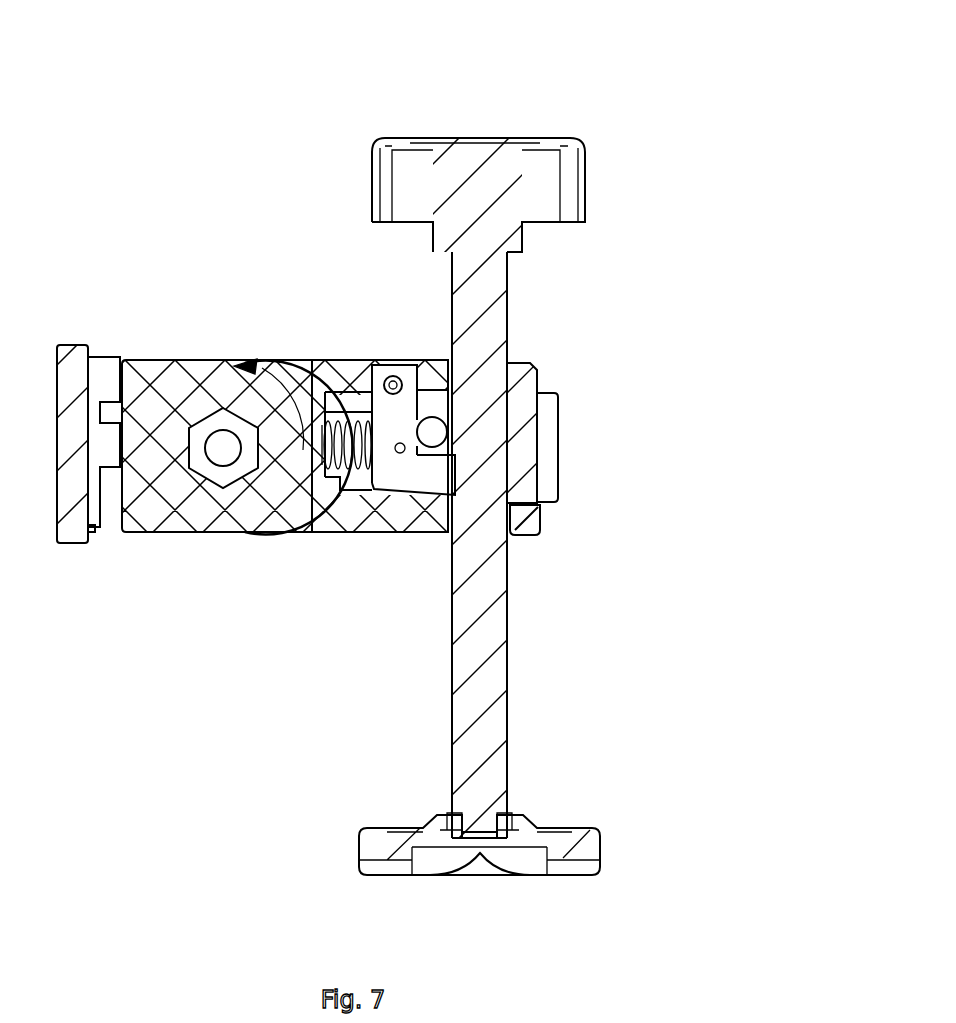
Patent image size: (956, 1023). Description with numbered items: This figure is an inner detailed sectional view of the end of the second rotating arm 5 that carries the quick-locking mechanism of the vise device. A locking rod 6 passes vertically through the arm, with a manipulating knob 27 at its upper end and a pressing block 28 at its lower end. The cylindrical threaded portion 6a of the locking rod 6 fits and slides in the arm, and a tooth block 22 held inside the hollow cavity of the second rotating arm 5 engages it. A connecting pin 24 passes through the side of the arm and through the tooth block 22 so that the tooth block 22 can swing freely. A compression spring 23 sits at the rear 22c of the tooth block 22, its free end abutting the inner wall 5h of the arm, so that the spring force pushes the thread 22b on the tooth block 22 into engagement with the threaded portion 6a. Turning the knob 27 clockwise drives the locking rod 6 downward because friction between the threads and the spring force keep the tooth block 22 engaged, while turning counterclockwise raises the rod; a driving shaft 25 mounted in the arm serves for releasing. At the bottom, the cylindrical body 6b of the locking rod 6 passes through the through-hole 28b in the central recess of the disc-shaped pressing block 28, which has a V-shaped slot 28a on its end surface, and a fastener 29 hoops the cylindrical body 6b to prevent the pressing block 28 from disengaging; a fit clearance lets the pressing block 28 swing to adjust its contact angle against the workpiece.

The manipulating knob 27 is at (508, 165).
The locking rod 6 is at (487, 590).
The cylindrical threaded portion 6a is at (508, 630).
The cylindrical body 6b is at (478, 825).
The second rotating arm 5 is at (147, 520).
The inner wall 5h is at (333, 505).
The compression spring 23 is at (320, 398).
The rear of the tooth block 22c is at (360, 422).
The tooth block 22 is at (425, 482).
The thread on the tooth block 22b is at (456, 470).
The connecting pin 24 is at (391, 378).
The driving shaft 25 is at (440, 424).
The pressing block 28 is at (580, 845).
The V-shaped slot 28a is at (440, 830).
The through-hole 28b is at (452, 815).
The fastener 29 is at (497, 828).